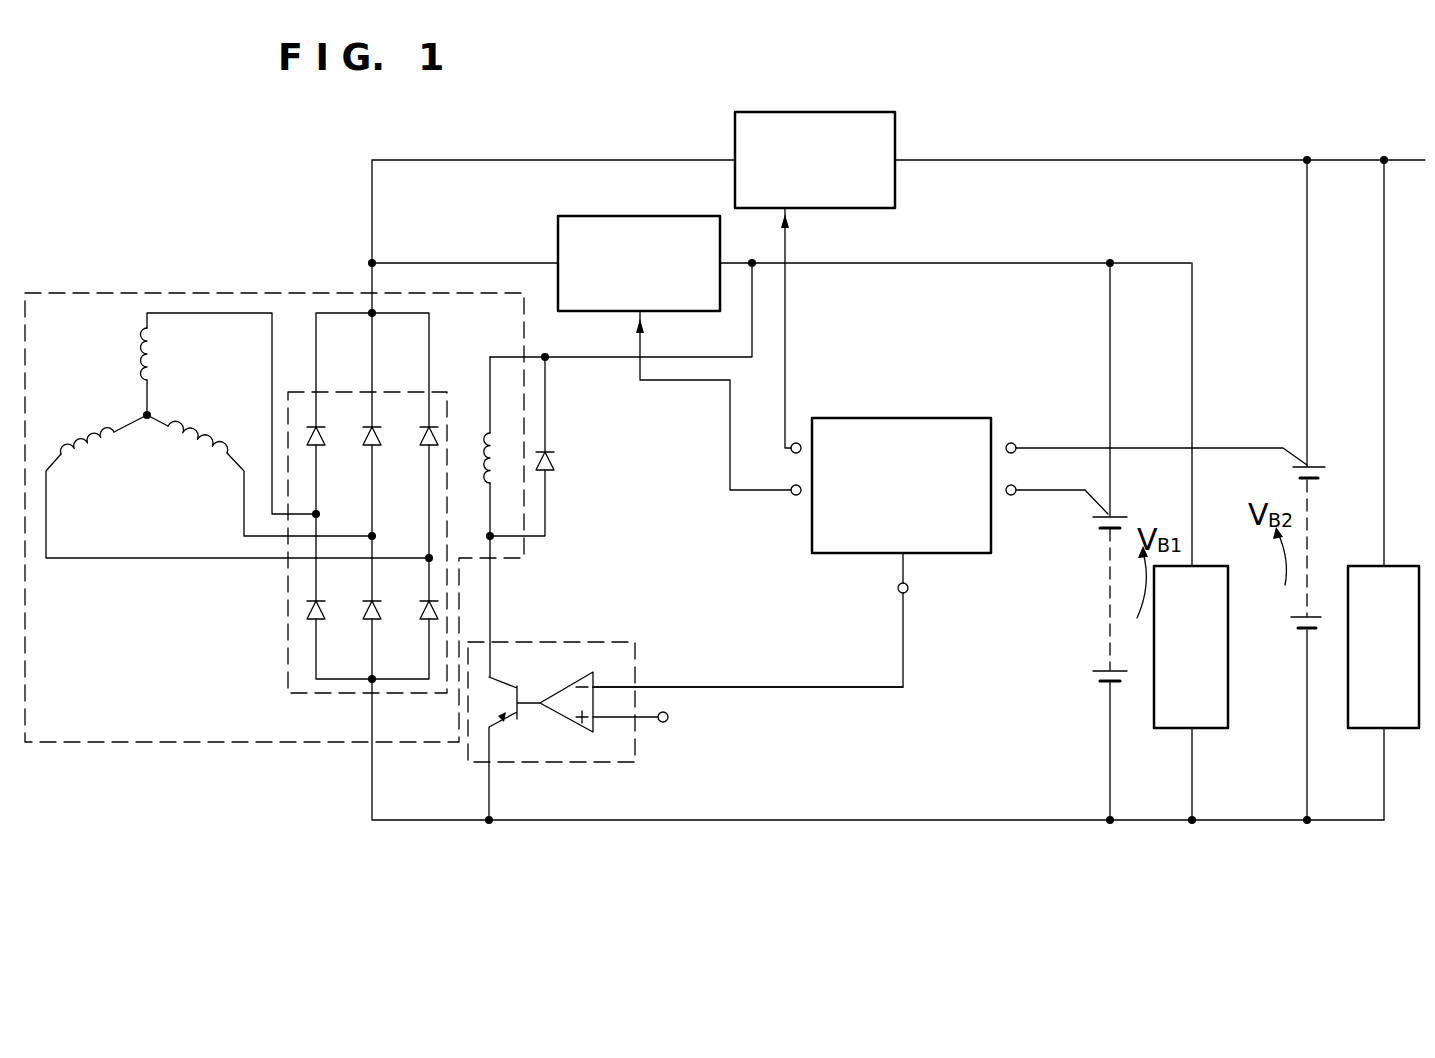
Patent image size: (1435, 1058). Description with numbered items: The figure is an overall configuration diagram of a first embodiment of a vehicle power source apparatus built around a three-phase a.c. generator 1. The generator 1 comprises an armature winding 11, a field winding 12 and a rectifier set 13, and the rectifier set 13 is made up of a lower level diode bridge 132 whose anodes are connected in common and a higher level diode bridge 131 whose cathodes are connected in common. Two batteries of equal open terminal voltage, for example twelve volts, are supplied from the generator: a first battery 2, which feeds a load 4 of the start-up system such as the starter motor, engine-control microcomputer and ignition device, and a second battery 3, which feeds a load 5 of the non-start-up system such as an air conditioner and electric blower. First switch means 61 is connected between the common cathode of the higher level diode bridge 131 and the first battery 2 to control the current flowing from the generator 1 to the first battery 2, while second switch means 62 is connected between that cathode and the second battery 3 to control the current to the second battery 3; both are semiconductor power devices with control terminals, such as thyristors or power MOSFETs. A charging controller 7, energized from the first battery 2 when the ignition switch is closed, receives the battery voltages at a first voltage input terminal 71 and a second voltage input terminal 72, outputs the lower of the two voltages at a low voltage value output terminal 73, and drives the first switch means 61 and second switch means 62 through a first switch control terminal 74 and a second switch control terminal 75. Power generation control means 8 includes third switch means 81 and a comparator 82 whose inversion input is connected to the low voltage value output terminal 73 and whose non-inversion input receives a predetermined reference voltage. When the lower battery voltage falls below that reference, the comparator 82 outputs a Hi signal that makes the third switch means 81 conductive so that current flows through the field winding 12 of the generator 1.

The three-phase a.c. generator 1 is at (140, 292).
The armature winding 11 is at (131, 430).
The field winding 12 is at (505, 478).
The rectifier set 13 is at (344, 522).
The higher level diode bridge 131 is at (416, 402).
The lower level diode bridge 132 is at (328, 672).
The first battery 2 is at (1120, 513).
The second battery 3 is at (1318, 462).
The load of a start-up system 4 is at (1210, 730).
The load of a non-start-up system 5 is at (1398, 565).
The first switch means 61 is at (570, 216).
The second switch means 62 is at (897, 124).
The charging controller 7 is at (960, 418).
The first voltage input terminal 71 is at (1015, 500).
The second voltage input terminal 72 is at (1015, 442).
The low voltage value output terminal 73 is at (909, 591).
The first switch control terminal 74 is at (790, 499).
The second switch control terminal 75 is at (797, 442).
The power generation control means 8 is at (553, 642).
The third switch means 81 is at (512, 725).
The comparator 82 is at (578, 722).